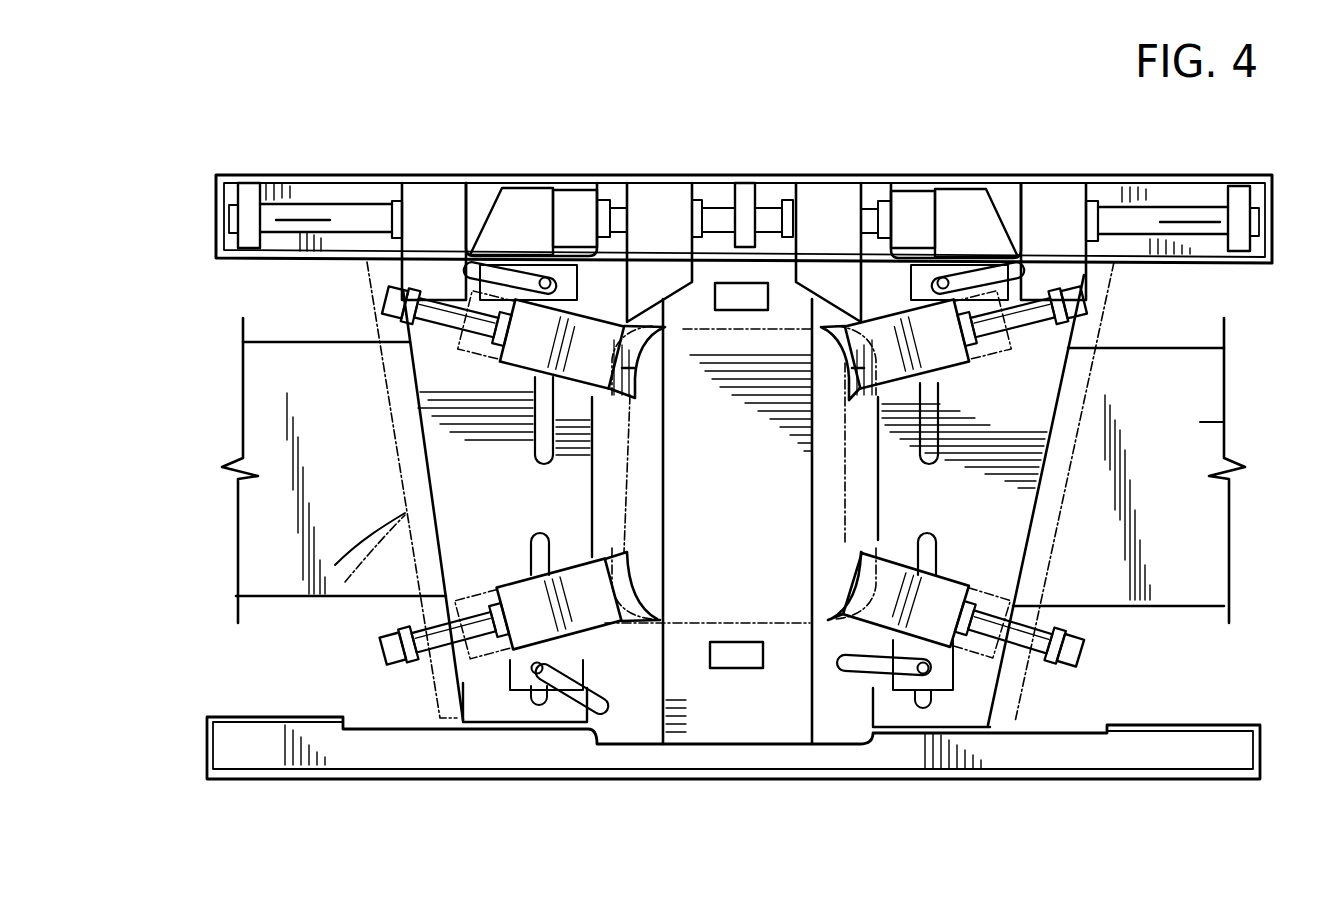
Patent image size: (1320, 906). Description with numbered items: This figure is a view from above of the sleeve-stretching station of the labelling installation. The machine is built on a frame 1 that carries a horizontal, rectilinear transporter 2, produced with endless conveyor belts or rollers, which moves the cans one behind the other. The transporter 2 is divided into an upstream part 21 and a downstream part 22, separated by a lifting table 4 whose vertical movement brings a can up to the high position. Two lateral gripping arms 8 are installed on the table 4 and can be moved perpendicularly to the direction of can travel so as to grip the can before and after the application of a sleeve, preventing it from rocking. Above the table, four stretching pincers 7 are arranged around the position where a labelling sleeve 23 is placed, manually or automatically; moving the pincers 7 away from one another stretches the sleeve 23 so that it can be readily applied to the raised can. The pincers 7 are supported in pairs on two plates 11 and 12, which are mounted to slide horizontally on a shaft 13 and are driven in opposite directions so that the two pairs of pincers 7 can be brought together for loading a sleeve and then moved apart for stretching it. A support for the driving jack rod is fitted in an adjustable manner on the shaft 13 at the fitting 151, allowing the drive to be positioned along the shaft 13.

The frame 1 is at (1126, 796).
The transporter 2 is at (1234, 372).
The upstream part of the transporter 21 is at (528, 198).
The downstream part of the transporter 22 is at (1200, 422).
The lifting table 4 is at (685, 665).
The stretching pincers 7 is at (848, 356).
The lateral gripping arms 8 is at (758, 311).
The plate 11 is at (405, 513).
The plate 12 is at (1115, 272).
The shaft 13 is at (345, 212).
The adjustable fitting of the support 151 is at (580, 205).
The labelling sleeve 23 is at (767, 640).